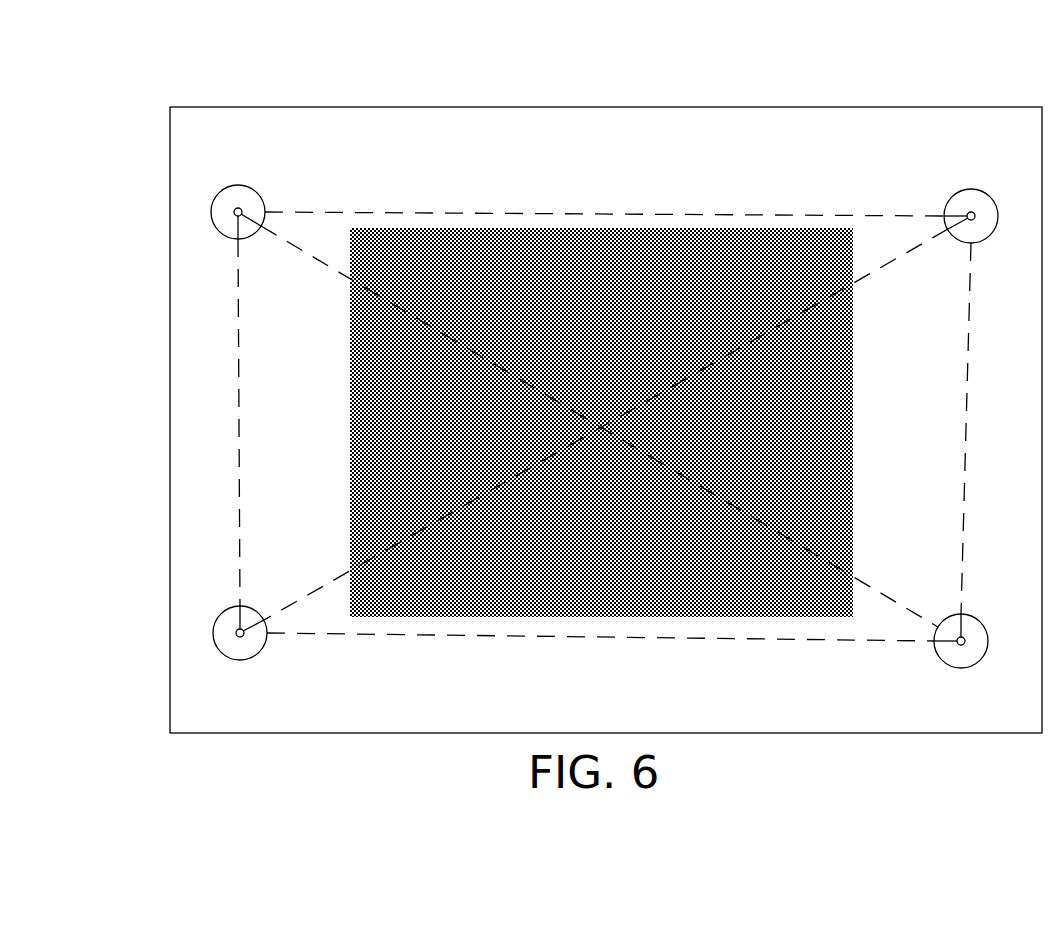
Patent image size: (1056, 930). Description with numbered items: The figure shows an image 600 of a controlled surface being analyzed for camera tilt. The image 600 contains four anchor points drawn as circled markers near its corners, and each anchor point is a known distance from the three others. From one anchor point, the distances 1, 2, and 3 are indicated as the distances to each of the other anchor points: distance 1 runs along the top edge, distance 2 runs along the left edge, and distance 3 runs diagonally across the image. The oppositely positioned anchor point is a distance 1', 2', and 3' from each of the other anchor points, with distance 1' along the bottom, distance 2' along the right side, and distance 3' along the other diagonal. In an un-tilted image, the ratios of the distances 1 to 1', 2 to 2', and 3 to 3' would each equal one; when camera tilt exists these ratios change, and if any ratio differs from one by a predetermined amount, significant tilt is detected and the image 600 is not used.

The image 600 is at (266, 71).
The distance 1 is at (604, 198).
The distance 1' is at (600, 653).
The distance 2 is at (230, 422).
The distance 2' is at (979, 428).
The distance 3 is at (599, 425).
The distance 3' is at (606, 424).